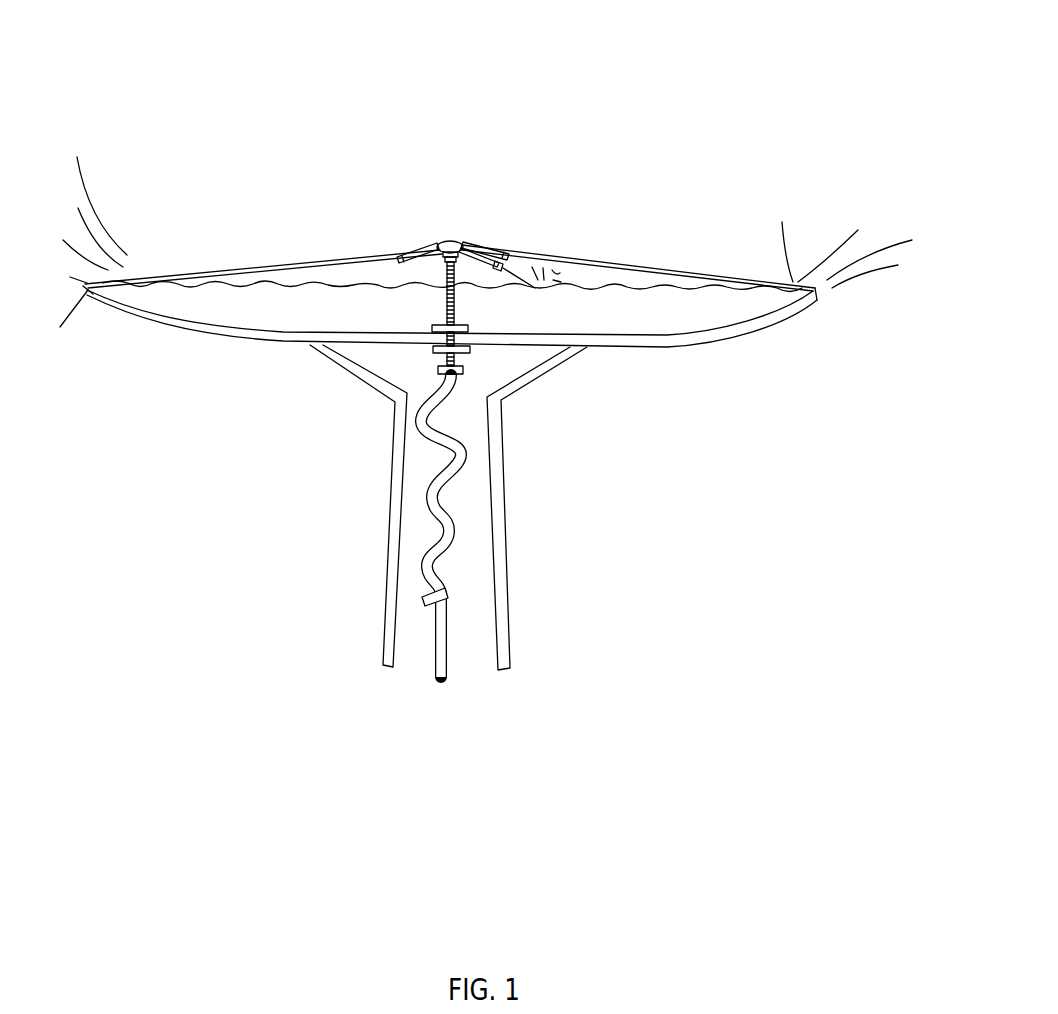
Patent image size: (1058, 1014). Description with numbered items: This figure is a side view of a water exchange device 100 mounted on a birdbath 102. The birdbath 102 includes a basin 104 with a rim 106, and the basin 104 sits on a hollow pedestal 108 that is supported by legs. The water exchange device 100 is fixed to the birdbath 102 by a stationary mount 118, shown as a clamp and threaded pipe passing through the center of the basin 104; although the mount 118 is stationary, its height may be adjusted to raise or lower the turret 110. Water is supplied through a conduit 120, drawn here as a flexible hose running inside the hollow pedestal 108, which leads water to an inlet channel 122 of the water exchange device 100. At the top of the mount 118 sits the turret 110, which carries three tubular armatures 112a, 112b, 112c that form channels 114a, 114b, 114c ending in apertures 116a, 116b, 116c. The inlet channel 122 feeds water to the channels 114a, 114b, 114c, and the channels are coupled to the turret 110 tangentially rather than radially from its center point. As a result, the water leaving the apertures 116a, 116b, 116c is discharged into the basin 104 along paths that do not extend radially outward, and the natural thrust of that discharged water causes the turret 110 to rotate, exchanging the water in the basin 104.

The water exchange device 100 is at (465, 176).
The birdbath 102 is at (698, 72).
The basin 104 is at (701, 347).
The rim 106 is at (826, 300).
The hollow pedestal 108 is at (536, 541).
The turret 110 is at (450, 243).
The tubular armature 112a is at (371, 206).
The tubular armature 112b is at (560, 233).
The tubular armature 112c is at (528, 192).
The channel 114a is at (403, 259).
The channel 114b is at (497, 260).
The channel 114c is at (488, 246).
The aperture 116a is at (390, 256).
The aperture 116b is at (516, 263).
The aperture 116c is at (518, 250).
The stationary mount 118 is at (402, 302).
The conduit 120 is at (425, 500).
The inlet channel 122 is at (463, 262).